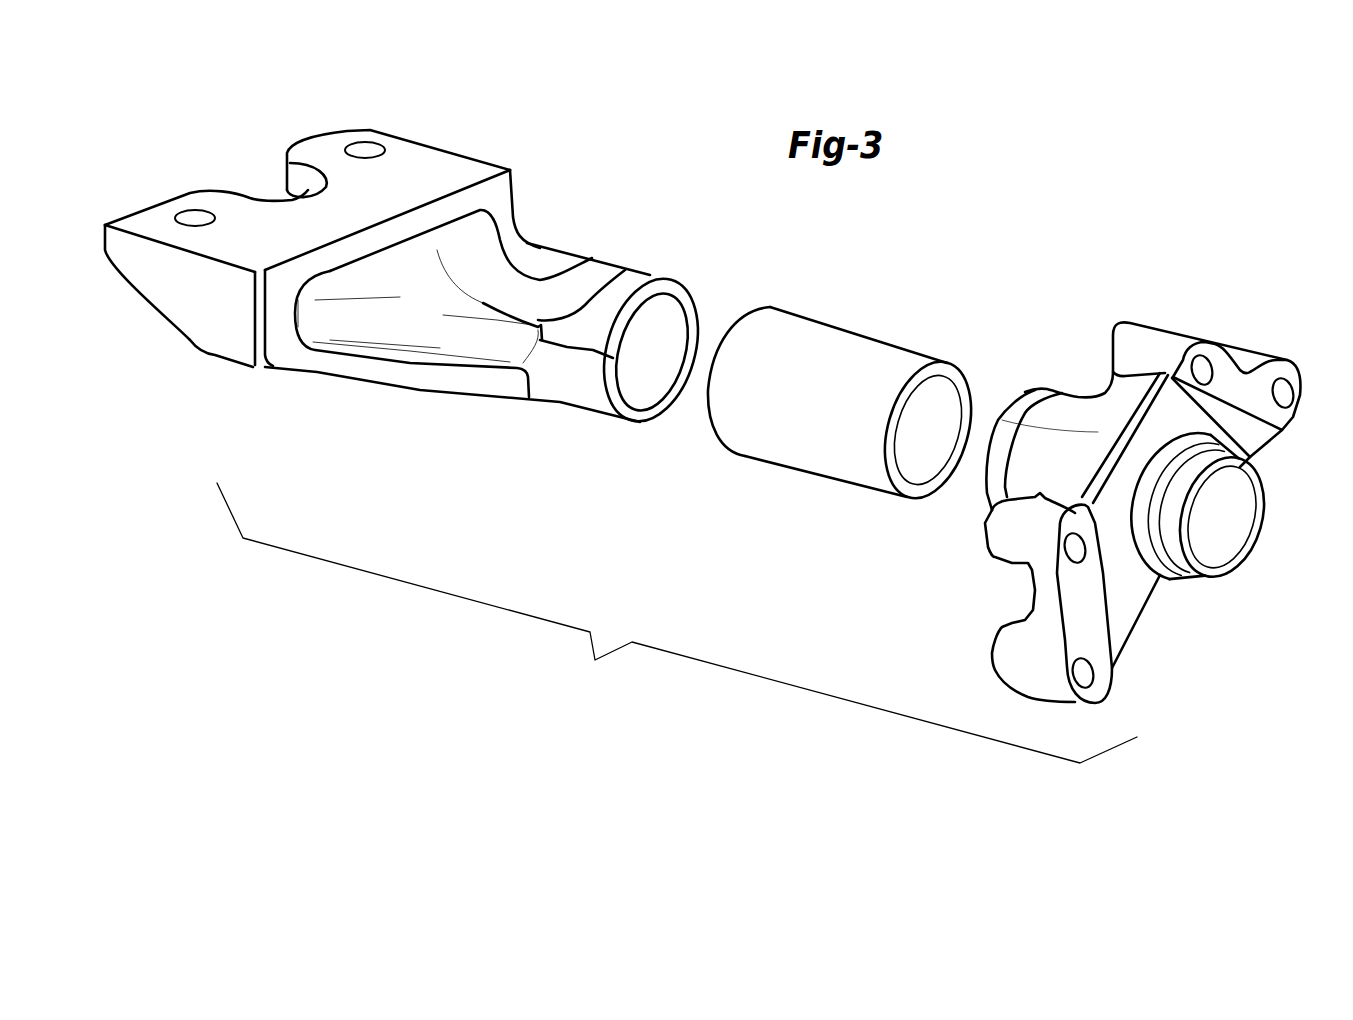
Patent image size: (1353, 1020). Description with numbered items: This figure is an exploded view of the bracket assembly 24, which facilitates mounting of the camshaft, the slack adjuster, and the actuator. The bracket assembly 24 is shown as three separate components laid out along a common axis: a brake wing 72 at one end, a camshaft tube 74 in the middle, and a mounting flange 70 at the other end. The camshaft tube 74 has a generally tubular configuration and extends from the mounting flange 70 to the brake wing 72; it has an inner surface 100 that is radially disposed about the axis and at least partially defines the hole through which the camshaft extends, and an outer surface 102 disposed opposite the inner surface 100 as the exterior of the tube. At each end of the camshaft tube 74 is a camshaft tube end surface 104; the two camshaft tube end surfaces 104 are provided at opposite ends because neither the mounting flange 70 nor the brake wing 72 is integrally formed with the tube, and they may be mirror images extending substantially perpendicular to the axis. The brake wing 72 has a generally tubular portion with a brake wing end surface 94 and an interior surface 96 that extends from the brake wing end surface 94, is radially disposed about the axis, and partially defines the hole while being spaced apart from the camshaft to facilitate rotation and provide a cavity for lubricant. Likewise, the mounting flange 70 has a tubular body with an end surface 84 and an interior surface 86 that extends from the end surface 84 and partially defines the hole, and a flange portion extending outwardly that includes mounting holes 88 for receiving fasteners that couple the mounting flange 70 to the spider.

The bracket assembly 24 is at (677, 623).
The mounting flange 70 is at (1153, 479).
The brake wing 72 is at (424, 298).
The camshaft tube 74 is at (845, 409).
The end surface 84 is at (1023, 392).
The interior surface 86 is at (1233, 527).
The mounting hole 88 is at (1282, 393).
The brake wing end surface 94 is at (692, 314).
The interior surface 96 is at (647, 390).
The inner surface 100 is at (913, 473).
The outer surface 102 is at (802, 330).
The camshaft tube end surface 104 is at (943, 367).